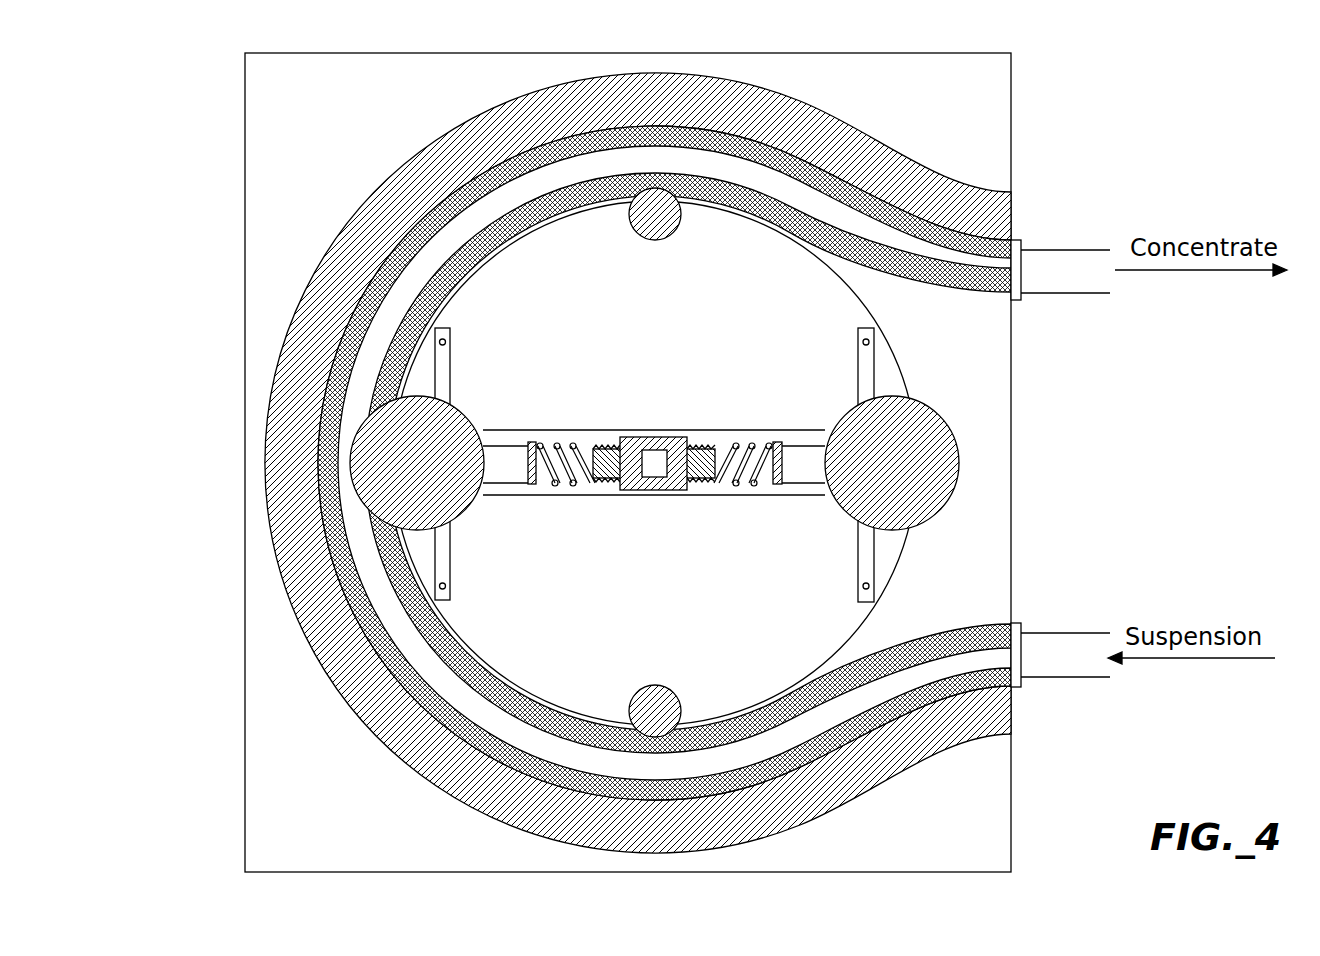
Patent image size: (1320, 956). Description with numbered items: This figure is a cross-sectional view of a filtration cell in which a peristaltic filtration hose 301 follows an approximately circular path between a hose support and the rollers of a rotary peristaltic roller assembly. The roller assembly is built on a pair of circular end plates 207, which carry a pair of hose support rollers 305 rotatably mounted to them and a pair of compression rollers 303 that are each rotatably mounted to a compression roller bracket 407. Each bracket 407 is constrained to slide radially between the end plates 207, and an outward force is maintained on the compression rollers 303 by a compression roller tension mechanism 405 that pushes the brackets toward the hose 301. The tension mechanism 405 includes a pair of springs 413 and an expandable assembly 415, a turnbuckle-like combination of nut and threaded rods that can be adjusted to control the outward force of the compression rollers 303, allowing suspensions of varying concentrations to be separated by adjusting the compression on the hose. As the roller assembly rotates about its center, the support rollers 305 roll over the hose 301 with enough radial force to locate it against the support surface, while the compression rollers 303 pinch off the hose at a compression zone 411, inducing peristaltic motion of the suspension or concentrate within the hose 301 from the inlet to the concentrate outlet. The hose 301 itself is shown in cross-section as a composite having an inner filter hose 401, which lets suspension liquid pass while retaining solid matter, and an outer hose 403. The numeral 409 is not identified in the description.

The circular end plates 207 is at (756, 307).
The peristaltic filtration hose 301 is at (897, 314).
The compression rollers 303 is at (383, 430).
The hose support rollers 305 is at (650, 231).
The filter hose 401 is at (1005, 255).
The outer hose 403 is at (1005, 250).
The compression roller tension mechanism 405 is at (758, 387).
The compression roller bracket 407 is at (777, 488).
The roller support bar 409 is at (877, 565).
The compression zone 411 is at (330, 468).
The springs 413 is at (733, 486).
The expandable assembly 415 is at (715, 426).